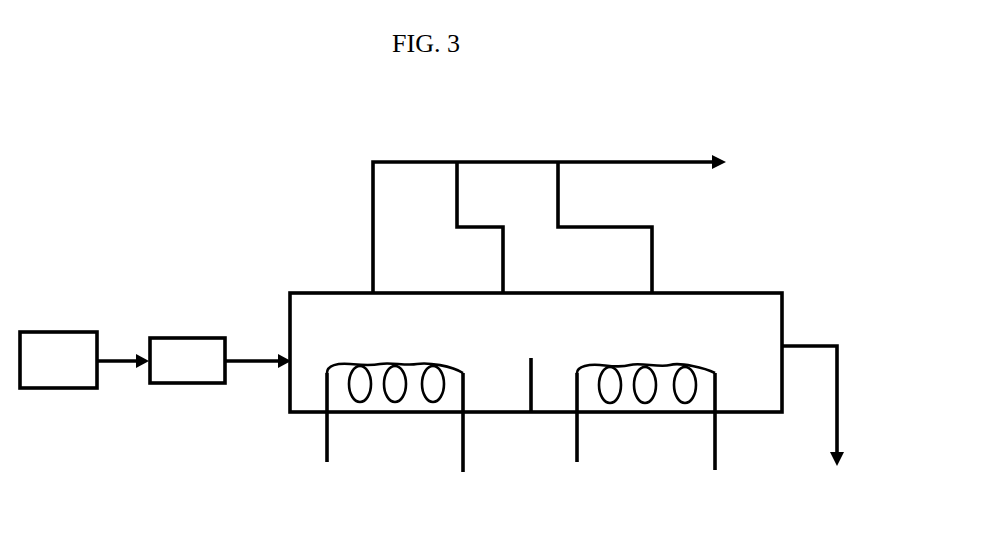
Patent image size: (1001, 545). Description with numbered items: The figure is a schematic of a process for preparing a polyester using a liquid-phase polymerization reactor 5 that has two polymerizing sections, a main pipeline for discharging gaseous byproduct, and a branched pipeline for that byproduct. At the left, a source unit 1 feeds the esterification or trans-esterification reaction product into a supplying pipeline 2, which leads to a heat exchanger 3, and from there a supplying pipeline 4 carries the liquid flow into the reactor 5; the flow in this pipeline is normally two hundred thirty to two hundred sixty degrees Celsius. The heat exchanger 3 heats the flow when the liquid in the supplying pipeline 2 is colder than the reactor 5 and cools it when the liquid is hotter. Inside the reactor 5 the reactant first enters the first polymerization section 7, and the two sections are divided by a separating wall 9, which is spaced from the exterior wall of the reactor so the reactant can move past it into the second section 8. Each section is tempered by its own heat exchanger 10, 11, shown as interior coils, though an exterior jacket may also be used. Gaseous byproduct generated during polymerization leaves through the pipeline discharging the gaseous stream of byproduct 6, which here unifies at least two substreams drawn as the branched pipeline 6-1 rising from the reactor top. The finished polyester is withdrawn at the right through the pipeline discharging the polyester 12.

The raw material supply unit 1 is at (58, 330).
The supplying pipeline 2 is at (125, 365).
The heat exchanger 3 is at (188, 338).
The supplying pipeline 4 is at (252, 357).
The liquid-phase polymerization reactor 5 is at (327, 290).
The pipeline discharging the gaseous stream of byproduct 6 is at (612, 160).
The branched pipeline 6-1 is at (605, 230).
The first polymerization section 7 is at (298, 398).
The second reaction zone 8 is at (547, 390).
The separating wall 9 is at (527, 385).
The heat exchanger 10 is at (460, 440).
The heat exchanger 11 is at (710, 437).
The pipeline discharging the polyester 12 is at (828, 445).